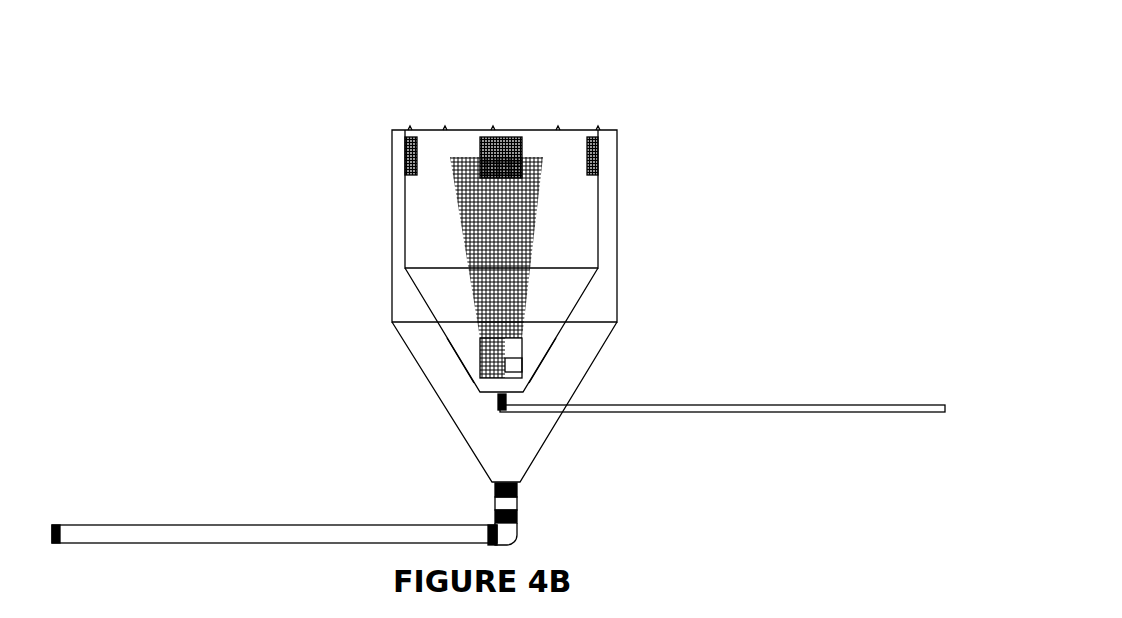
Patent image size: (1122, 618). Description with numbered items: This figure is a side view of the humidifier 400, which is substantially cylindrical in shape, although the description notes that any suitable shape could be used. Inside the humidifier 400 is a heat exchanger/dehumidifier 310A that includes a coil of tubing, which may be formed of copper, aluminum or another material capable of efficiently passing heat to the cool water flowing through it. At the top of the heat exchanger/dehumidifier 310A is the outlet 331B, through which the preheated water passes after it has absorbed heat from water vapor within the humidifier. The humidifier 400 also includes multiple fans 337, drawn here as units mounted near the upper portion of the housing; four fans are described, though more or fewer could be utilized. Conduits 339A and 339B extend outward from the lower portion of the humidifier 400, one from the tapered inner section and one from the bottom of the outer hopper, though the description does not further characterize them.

The humidifier 400 is at (256, 60).
The heat exchanger/dehumidifier 310A is at (452, 170).
The outlet 331B is at (492, 130).
The fans 337 is at (598, 160).
The upper outlet conduit 339A is at (738, 406).
The lower outlet conduit 339B is at (240, 525).